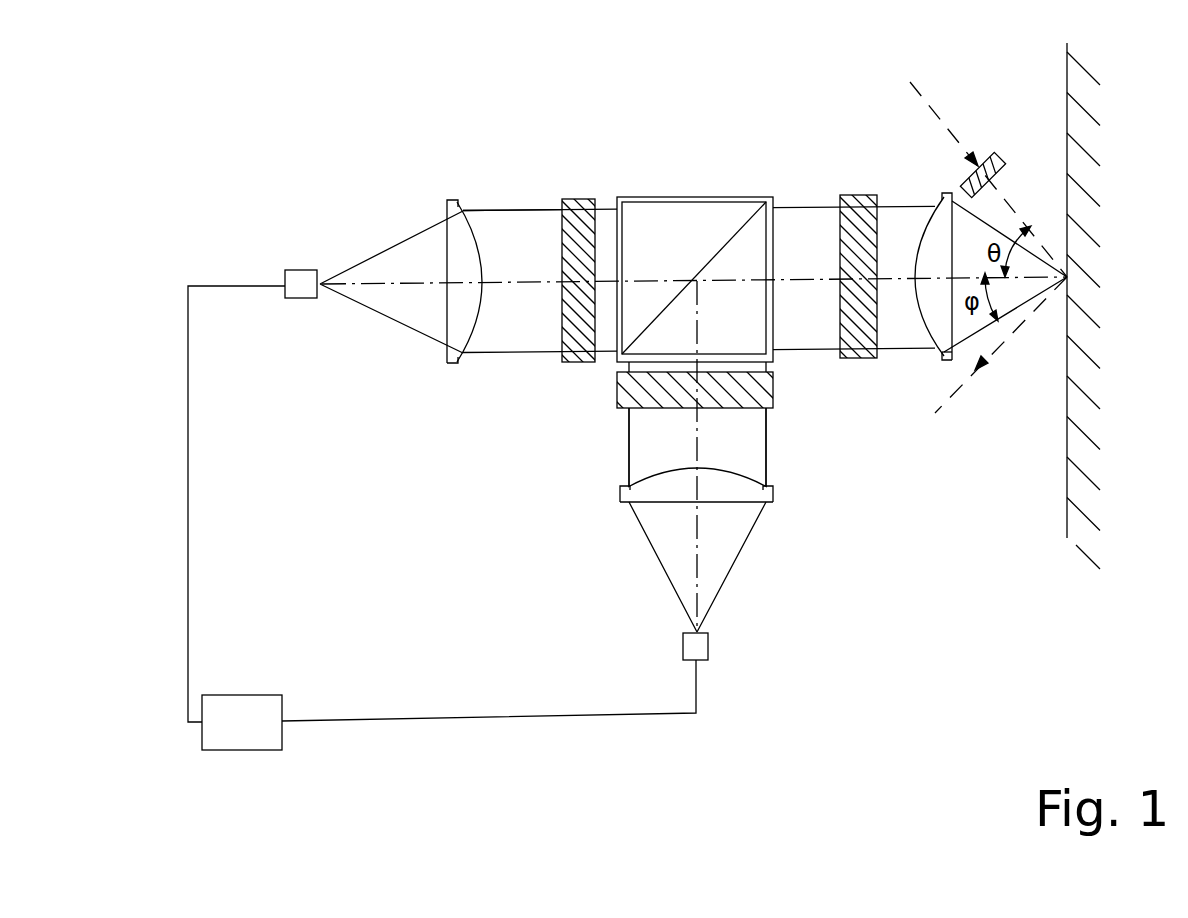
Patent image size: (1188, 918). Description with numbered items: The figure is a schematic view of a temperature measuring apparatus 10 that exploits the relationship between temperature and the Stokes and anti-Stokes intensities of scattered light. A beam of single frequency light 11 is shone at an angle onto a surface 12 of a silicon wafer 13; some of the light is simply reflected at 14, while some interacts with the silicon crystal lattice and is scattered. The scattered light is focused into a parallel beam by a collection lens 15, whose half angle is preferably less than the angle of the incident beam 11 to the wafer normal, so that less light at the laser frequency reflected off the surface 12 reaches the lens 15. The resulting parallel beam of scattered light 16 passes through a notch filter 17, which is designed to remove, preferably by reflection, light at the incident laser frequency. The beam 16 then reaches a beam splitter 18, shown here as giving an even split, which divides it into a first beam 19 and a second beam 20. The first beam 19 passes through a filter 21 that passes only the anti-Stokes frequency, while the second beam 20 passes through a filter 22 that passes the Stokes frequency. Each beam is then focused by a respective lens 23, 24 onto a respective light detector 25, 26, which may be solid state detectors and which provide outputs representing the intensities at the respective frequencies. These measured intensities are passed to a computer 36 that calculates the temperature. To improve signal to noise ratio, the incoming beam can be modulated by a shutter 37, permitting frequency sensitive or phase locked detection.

The temperature measuring apparatus 10 is at (584, 139).
The beam of single frequency light 11 is at (940, 118).
The surface 12 is at (1066, 72).
The silicon wafer 13 is at (1077, 150).
The reflected light 14 is at (950, 397).
The collection lens 15 is at (945, 351).
The parallel beam of scattered light 16 is at (905, 220).
The notch filter 17 is at (866, 212).
The beam splitter 18 is at (711, 197).
The first beam 19 is at (520, 207).
The second beam 20 is at (752, 445).
The filter 21 is at (583, 343).
The filter 22 is at (628, 402).
The lens 23 is at (452, 363).
The lens 24 is at (627, 497).
The light detector 25 is at (302, 283).
The light detector 26 is at (710, 648).
The computer 36 is at (262, 730).
The shutter 37 is at (998, 153).